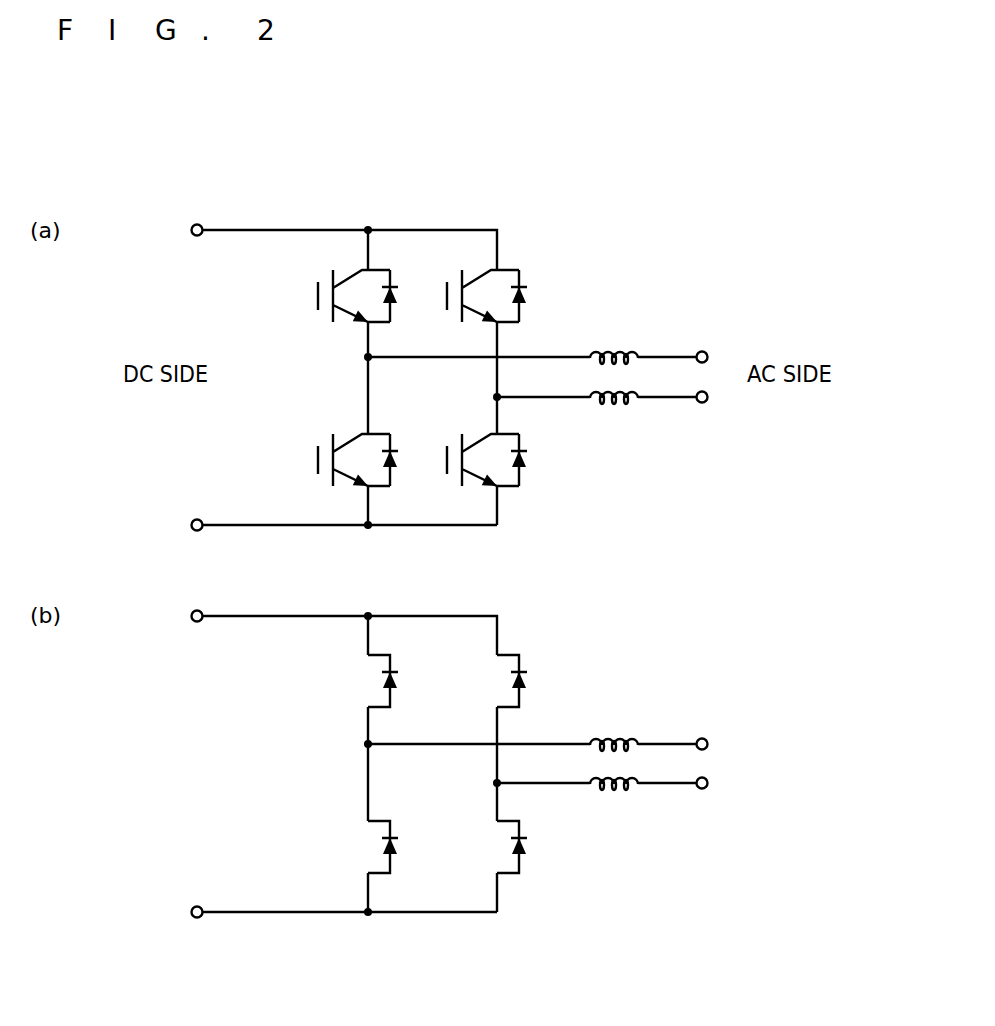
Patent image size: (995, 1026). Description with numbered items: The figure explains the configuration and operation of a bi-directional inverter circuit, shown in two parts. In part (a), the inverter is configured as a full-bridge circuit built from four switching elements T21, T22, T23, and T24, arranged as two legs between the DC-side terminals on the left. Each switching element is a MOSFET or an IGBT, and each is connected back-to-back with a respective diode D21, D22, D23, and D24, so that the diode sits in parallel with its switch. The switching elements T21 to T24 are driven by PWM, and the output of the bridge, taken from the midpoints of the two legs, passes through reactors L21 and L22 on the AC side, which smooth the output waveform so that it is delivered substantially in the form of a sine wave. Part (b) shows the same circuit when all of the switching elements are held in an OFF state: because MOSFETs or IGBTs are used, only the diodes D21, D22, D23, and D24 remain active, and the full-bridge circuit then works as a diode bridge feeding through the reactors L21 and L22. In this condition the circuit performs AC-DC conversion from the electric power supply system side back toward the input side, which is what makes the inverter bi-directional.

The switching element T21 is at (359, 269).
The switching element T22 is at (359, 433).
The switching element T23 is at (488, 269).
The switching element T24 is at (488, 433).
The diode D21 is at (399, 297).
The diode D22 is at (399, 461).
The diode D23 is at (528, 297).
The diode D24 is at (528, 461).
The reactor L21 is at (620, 350).
The reactor L22 is at (622, 404).